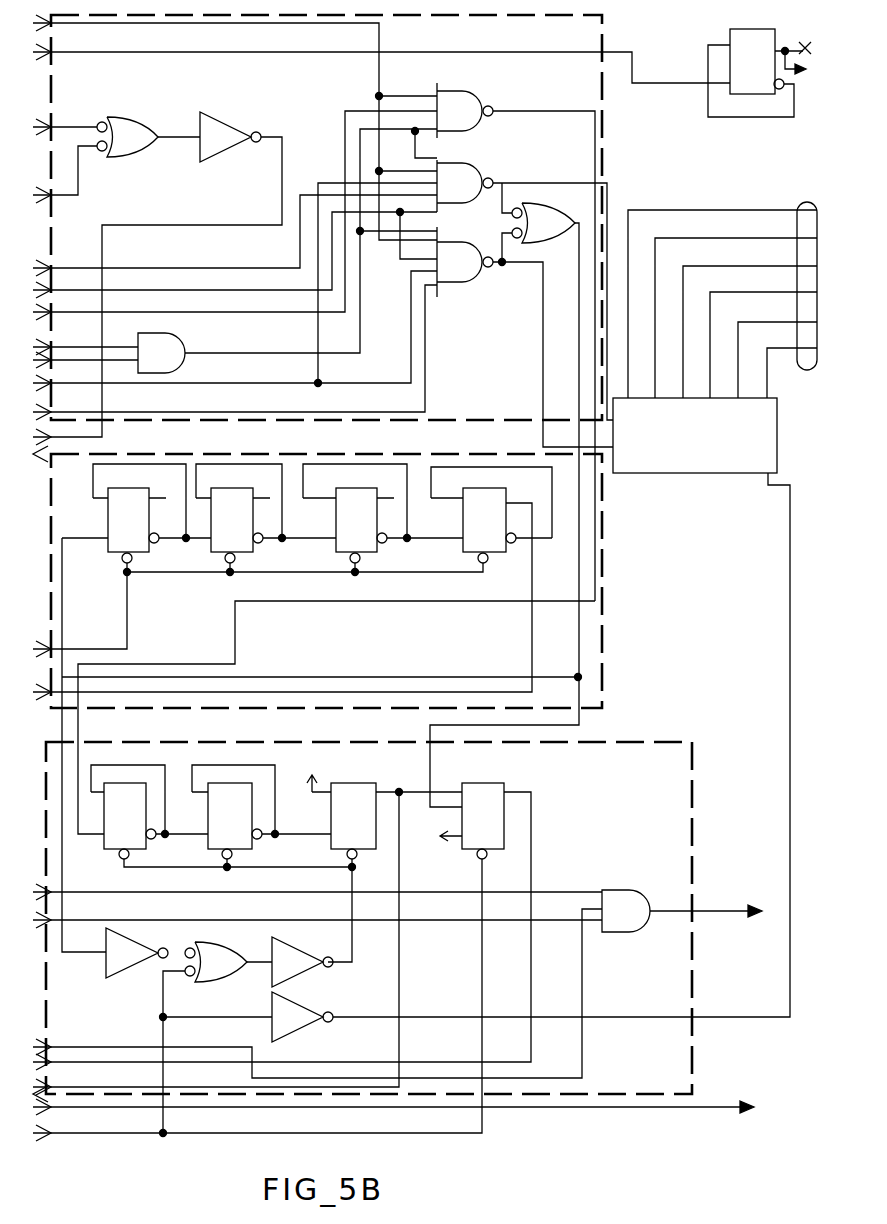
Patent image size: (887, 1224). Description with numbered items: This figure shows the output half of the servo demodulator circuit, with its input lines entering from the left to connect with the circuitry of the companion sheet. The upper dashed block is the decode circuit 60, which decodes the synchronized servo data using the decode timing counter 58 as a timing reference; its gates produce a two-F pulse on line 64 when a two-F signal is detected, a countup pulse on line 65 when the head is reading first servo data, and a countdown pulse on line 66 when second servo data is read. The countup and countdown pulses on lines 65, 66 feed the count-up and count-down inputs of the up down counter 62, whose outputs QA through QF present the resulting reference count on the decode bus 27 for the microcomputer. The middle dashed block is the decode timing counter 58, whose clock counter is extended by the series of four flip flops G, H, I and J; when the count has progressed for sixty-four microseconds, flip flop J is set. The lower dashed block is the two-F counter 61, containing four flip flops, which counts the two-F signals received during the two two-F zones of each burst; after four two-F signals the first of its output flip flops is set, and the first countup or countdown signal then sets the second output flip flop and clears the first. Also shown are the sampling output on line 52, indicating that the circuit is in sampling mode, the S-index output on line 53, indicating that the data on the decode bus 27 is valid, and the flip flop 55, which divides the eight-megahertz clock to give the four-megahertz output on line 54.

The decode bus 27 is at (812, 207).
The line 52 is at (756, 912).
The line 53 is at (730, 1089).
The line 54 is at (808, 74).
The flip flop 55 is at (751, 73).
The decode timing counter 58 is at (641, 603).
The decode circuit 60 is at (638, 144).
The 2F counter 61 is at (692, 746).
The up down counter 62 is at (561, 694).
The line 64 is at (567, 110).
The line 65 is at (567, 183).
The line 66 is at (545, 346).